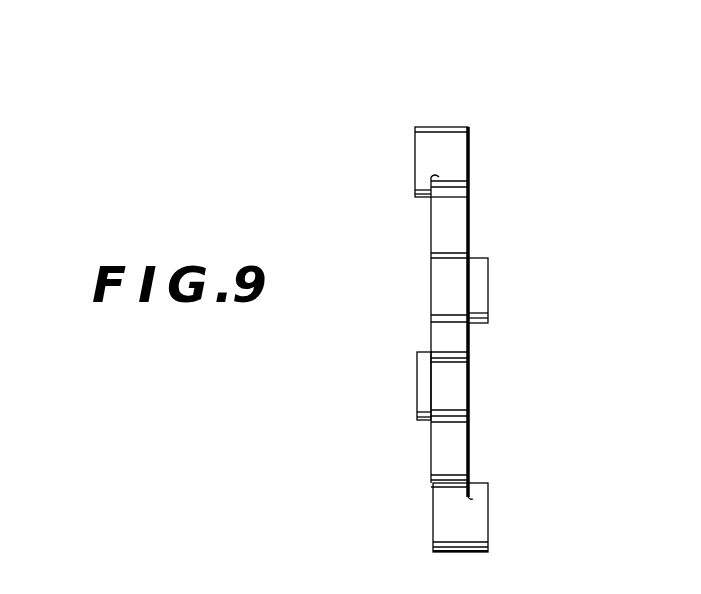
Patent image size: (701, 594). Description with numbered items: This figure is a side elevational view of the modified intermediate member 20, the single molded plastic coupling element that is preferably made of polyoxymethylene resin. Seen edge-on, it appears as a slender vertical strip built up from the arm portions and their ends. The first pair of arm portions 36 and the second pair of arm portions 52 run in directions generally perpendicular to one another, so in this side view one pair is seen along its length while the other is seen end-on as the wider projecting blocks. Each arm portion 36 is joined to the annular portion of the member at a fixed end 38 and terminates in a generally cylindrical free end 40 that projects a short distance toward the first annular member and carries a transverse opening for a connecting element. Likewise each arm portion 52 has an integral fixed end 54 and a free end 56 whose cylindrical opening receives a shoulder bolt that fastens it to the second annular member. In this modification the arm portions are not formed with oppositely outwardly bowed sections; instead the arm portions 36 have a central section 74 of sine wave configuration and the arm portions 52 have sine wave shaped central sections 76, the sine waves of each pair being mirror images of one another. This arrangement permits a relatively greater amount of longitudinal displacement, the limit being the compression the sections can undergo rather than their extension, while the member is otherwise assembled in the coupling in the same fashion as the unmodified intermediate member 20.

The intermediate member 20 is at (455, 126).
The first pair of arm portions 36 is at (476, 210).
The fixed end 38 is at (445, 289).
The free end 40 is at (427, 150).
The second pair of arm portions 52 is at (476, 448).
The fixed end 54 is at (450, 383).
The free end 56 is at (480, 278).
The central section 74 is at (436, 220).
The central section 76 is at (445, 452).